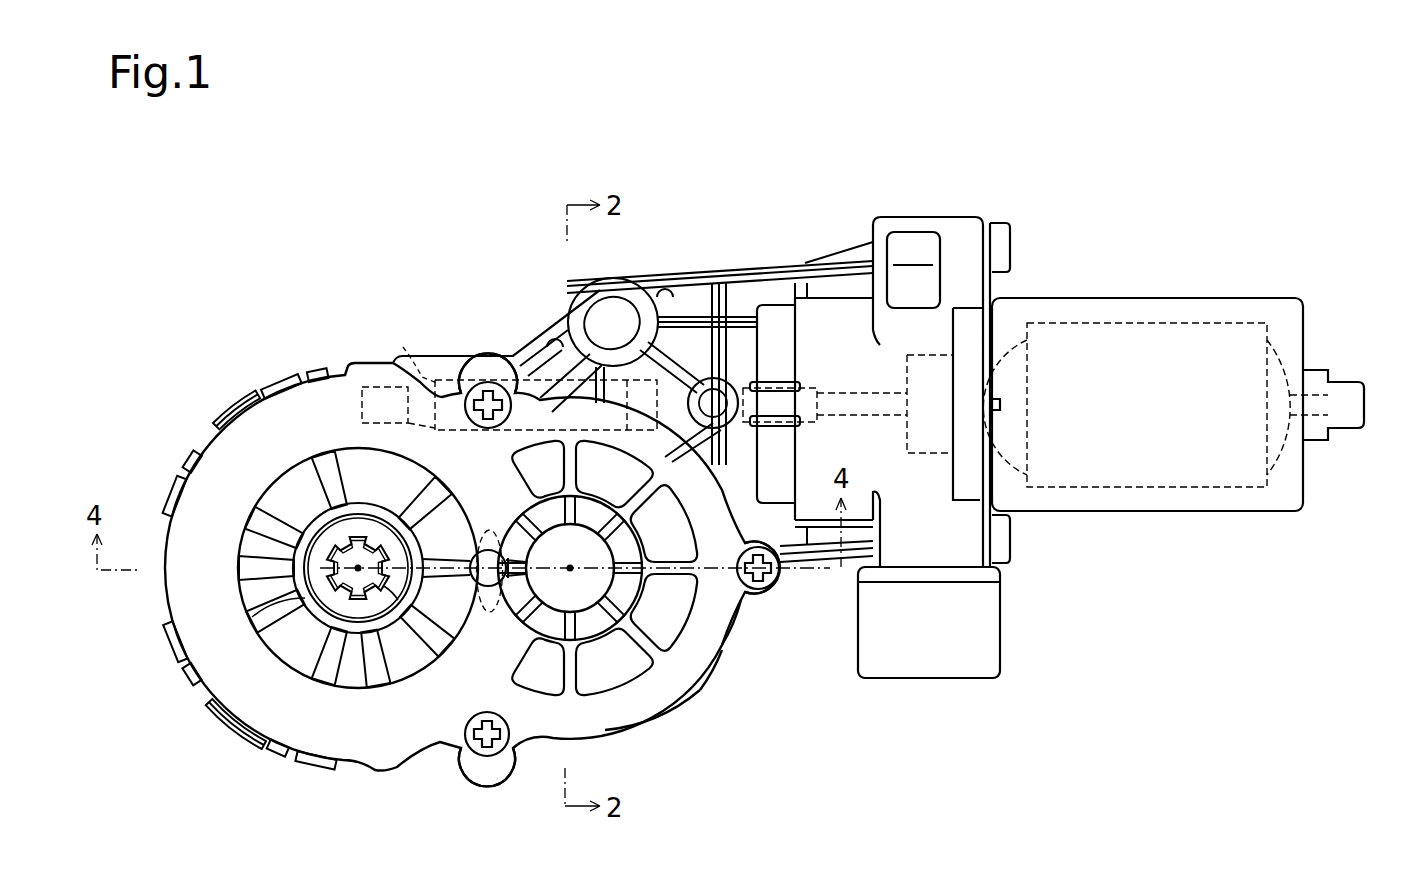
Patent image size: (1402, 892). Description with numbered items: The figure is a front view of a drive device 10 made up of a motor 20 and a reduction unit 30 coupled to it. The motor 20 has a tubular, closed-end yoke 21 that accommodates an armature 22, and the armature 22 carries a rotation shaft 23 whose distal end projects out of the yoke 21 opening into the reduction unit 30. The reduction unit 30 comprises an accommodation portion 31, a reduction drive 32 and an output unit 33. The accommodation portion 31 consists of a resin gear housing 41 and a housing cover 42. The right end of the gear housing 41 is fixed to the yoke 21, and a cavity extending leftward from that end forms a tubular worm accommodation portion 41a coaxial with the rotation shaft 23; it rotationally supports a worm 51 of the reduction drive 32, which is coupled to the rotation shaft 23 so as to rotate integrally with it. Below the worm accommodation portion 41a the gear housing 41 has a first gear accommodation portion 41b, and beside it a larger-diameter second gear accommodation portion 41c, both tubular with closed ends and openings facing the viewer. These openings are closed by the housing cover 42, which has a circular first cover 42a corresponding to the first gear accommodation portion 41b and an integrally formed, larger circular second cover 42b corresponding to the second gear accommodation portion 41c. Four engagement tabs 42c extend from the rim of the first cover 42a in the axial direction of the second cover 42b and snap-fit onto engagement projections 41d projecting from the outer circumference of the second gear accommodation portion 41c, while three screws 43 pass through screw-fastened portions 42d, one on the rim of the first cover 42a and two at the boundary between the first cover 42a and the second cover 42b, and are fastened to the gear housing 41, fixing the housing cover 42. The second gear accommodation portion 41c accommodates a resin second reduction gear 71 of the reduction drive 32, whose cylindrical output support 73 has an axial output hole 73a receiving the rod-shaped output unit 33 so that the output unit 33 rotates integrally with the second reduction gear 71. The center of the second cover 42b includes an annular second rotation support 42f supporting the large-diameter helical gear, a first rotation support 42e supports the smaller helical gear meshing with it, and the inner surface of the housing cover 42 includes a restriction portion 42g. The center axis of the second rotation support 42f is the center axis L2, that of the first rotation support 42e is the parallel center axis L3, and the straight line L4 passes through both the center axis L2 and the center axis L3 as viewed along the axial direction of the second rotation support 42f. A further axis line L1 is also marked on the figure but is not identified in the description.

The drive device 10 is at (1041, 114).
The motor 20 is at (1034, 163).
The yoke 21 is at (1232, 298).
The armature 22 is at (1190, 488).
The rotation shaft 23 is at (860, 392).
The reduction unit 30 is at (981, 163).
The accommodation portion 31 is at (702, 682).
The reduction drive 32 is at (392, 348).
The output unit 33 is at (396, 588).
The gear housing 41 is at (705, 272).
The worm accommodation portion 41a is at (462, 356).
The first gear accommodation portion 41b is at (655, 716).
The second gear accommodation portion 41c is at (226, 728).
The engagement projections 41d is at (285, 384).
The housing cover 42 is at (380, 772).
The first cover 42a is at (722, 638).
The second cover 42b is at (232, 416).
The engagement tabs 42c is at (322, 366).
The screw-fastened portions 42d is at (497, 377).
The first rotation support 42e is at (596, 618).
The second rotation support 42f is at (262, 612).
The restriction portion 42g is at (488, 612).
The screws 43 is at (479, 422).
The worm 51 is at (604, 430).
The second reduction gear 71 is at (318, 614).
The output support 73 is at (327, 557).
The output hole 73a is at (372, 606).
The axis line L1 is at (356, 566).
The center axis L2 is at (360, 566).
The center axis L3 is at (574, 566).
The straight line L4 is at (476, 530).